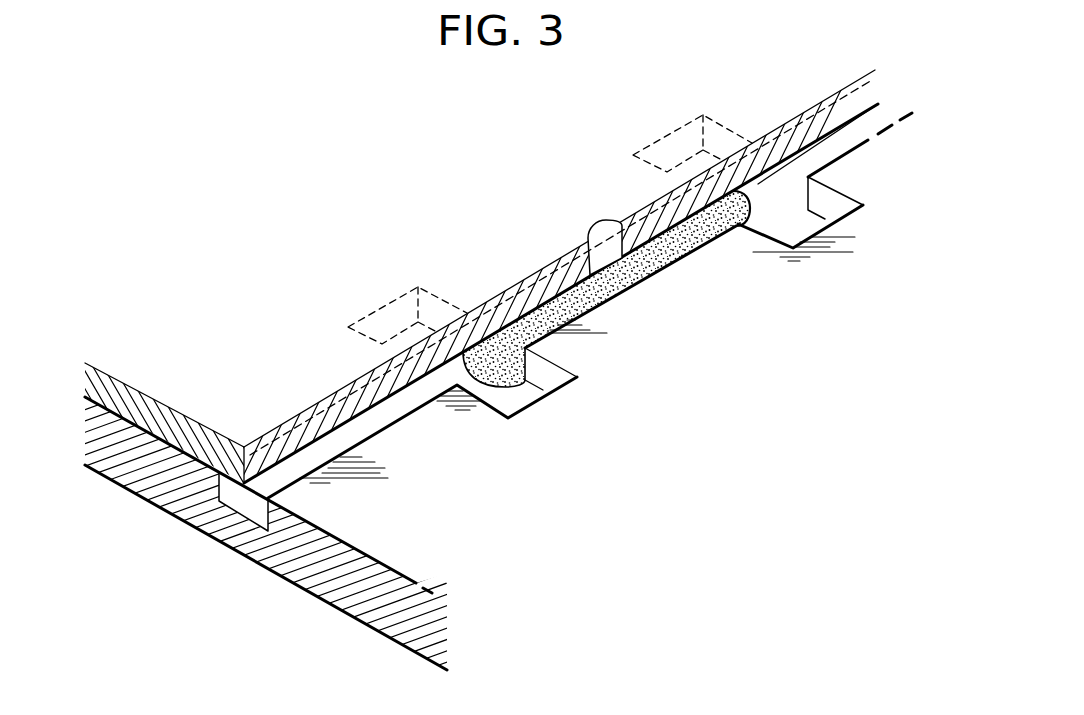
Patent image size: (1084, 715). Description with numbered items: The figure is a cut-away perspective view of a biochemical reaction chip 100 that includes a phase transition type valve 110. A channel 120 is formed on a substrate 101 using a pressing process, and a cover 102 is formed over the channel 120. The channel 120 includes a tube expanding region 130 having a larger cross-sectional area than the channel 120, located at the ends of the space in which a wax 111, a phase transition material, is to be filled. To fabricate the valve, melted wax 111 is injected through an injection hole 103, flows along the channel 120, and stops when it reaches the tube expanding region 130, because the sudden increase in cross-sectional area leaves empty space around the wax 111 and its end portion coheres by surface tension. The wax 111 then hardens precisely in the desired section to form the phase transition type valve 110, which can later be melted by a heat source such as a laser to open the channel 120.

The biochemical reaction chip 100 is at (674, 271).
The substrate 101 is at (167, 503).
The cover 102 is at (160, 412).
The injection hole 103 is at (593, 228).
The phase transition type valve 110 is at (304, 599).
The wax 111 is at (595, 302).
The channel 120 is at (350, 433).
The tube expanding region 130 is at (790, 227).